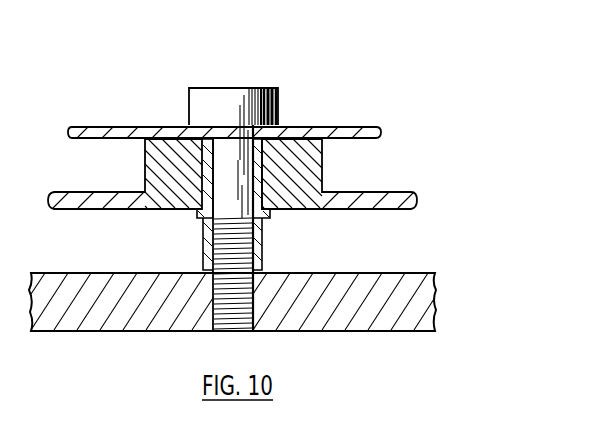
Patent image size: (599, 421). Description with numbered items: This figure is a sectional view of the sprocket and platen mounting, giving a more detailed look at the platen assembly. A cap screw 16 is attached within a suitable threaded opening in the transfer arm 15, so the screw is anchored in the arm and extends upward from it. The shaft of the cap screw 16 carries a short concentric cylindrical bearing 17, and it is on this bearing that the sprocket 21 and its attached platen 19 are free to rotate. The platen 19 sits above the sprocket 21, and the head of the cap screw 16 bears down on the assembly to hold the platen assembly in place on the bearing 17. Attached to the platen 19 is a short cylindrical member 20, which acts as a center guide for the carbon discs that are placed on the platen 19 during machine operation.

The transfer arm 15 is at (343, 306).
The cap screw 16 is at (232, 314).
The cylindrical bearing 17 is at (202, 249).
The platen 19 is at (316, 127).
The cylindrical member 20 is at (262, 88).
The sprocket 21 is at (334, 191).